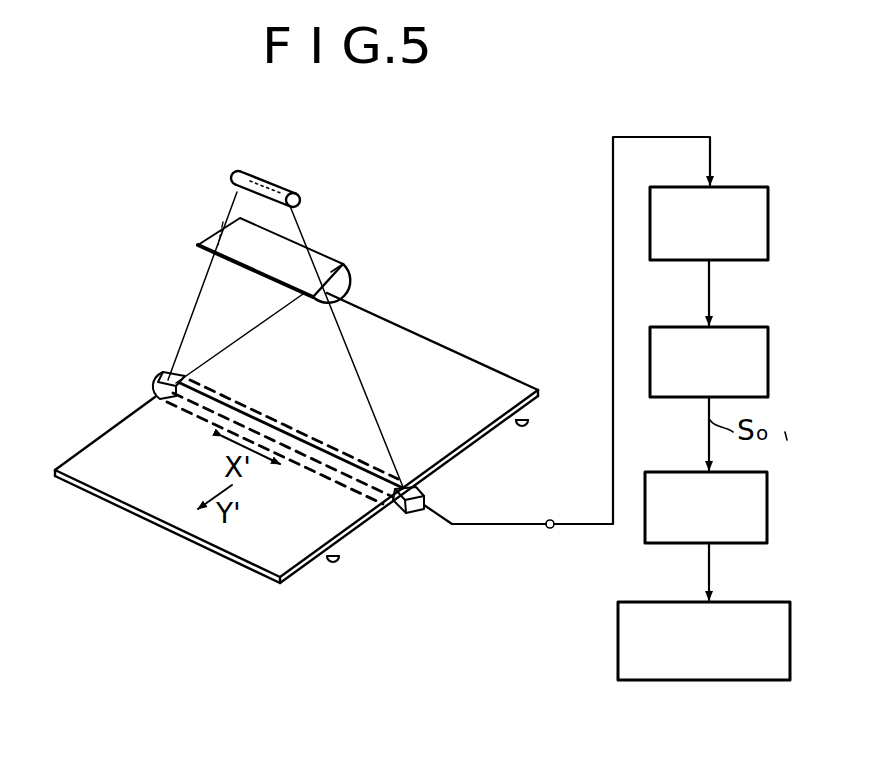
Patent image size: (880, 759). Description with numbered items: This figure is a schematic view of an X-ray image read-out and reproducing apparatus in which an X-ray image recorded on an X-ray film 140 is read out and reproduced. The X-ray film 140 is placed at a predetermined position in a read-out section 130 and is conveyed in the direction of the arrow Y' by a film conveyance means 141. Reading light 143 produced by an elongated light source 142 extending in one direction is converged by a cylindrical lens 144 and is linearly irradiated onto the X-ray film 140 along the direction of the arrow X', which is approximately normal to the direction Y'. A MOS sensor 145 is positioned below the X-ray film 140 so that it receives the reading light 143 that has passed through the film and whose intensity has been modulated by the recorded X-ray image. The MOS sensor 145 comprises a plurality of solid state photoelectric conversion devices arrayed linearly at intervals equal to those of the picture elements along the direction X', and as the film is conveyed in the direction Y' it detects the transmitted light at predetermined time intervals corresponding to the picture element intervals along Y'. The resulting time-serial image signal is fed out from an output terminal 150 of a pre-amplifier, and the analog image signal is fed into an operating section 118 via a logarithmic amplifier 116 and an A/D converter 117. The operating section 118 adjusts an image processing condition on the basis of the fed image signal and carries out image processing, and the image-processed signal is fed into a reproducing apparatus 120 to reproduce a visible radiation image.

The logarithmic amplifier 116 is at (745, 186).
The A/D converter 117 is at (745, 327).
The operating section 118 is at (737, 546).
The reproducing apparatus 120 is at (720, 683).
The read-out section 130 is at (417, 190).
The X-ray film 140 is at (508, 375).
The film conveyance means 141 is at (529, 421).
The elongated light source 142 is at (297, 194).
The reading light 143 is at (298, 228).
The cylindrical lens 144 is at (354, 266).
The MOS sensor 145 is at (428, 497).
The output terminal 150 is at (551, 529).